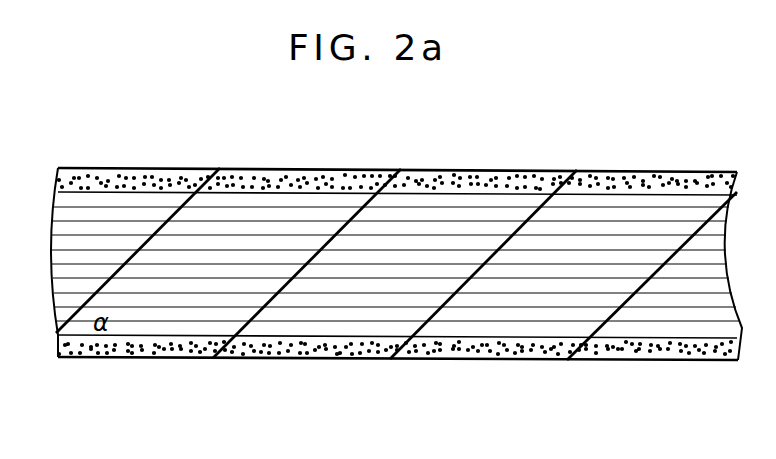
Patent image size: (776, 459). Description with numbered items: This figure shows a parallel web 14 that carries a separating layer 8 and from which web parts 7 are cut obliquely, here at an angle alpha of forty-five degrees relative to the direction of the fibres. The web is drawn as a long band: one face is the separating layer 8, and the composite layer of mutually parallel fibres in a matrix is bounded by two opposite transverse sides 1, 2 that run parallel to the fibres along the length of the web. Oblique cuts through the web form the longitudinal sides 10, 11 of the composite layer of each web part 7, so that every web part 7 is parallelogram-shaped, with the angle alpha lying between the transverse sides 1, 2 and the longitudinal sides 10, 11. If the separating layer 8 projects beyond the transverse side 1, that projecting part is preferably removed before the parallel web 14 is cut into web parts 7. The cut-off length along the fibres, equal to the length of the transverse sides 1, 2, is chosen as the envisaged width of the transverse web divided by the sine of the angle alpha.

The transverse side 1 is at (165, 337).
The transverse side 2 is at (348, 190).
The web part 7 is at (263, 233).
The separating layer 8 is at (492, 348).
The longitudinal side 10 is at (150, 238).
The longitudinal side 11 is at (272, 300).
The parallel web 14 is at (575, 172).